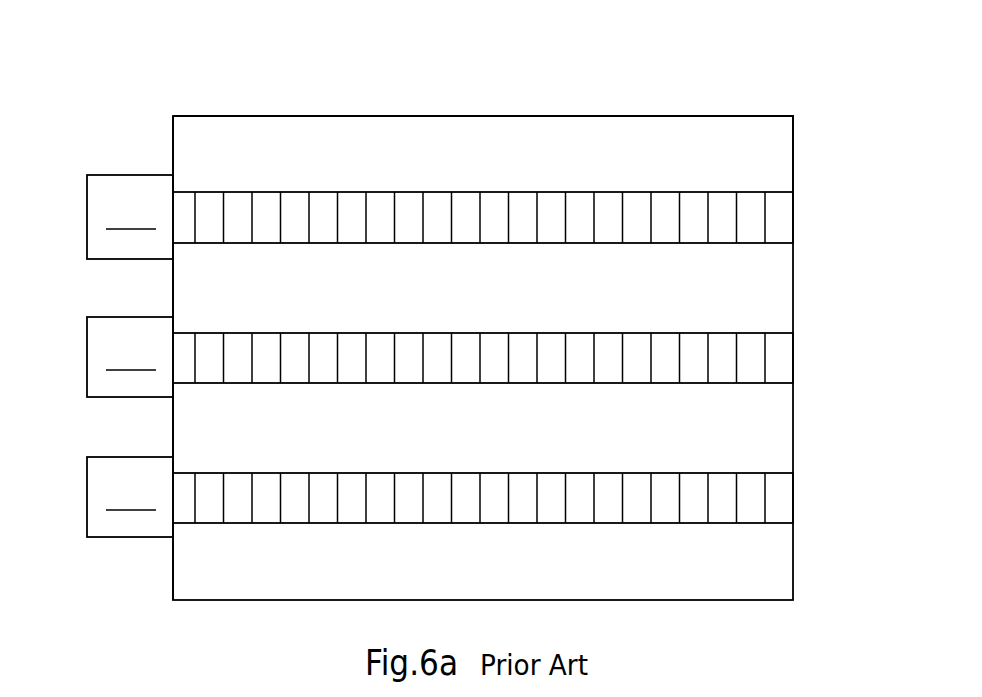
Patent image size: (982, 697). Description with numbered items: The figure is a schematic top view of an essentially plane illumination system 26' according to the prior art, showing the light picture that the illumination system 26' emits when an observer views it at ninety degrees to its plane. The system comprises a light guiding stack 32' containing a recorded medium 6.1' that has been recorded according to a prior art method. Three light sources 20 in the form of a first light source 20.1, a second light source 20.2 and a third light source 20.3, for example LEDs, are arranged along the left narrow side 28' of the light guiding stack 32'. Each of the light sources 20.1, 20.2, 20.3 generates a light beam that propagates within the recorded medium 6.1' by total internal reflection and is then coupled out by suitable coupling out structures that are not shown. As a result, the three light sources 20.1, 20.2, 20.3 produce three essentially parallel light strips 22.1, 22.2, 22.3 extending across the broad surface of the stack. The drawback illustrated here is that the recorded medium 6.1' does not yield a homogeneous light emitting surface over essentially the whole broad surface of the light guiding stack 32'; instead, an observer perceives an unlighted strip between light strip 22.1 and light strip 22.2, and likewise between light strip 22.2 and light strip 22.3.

The light sources 20 is at (97, 356).
The first light source 20.1 is at (130, 217).
The second light source 20.2 is at (130, 357).
The third light source 20.3 is at (130, 497).
The first light strip 22.1 is at (780, 217).
The second light strip 22.2 is at (780, 357).
The third light strip 22.3 is at (780, 497).
The illumination system 26' is at (538, 319).
The narrow side 28' is at (139, 352).
The recorded medium 6.1' is at (483, 89).
The light guiding stack 32' is at (483, 105).